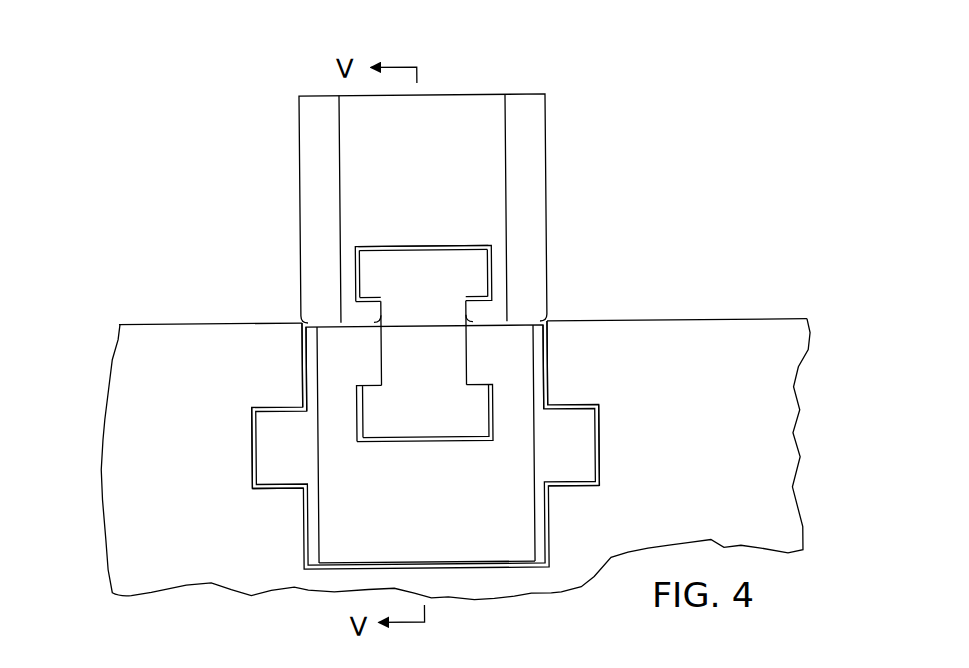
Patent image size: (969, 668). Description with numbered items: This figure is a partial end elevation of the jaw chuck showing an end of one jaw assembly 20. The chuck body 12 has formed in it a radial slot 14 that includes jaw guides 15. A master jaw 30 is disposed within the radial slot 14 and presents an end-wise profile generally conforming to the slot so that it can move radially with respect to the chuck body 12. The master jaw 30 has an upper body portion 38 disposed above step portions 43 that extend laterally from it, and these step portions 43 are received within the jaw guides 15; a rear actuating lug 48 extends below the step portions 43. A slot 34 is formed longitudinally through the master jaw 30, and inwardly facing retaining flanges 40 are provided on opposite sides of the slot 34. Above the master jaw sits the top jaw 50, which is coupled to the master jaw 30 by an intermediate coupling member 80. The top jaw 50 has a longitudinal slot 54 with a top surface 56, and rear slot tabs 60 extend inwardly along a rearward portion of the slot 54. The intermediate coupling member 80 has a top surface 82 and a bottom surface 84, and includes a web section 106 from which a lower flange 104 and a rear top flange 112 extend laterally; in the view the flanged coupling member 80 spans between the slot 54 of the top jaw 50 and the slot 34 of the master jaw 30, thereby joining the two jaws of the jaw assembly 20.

The jaw assembly 20 is at (246, 108).
The top jaw 50 is at (552, 90).
The top surface 82 is at (450, 246).
The intermediate coupling member 80 is at (496, 254).
The rear top flange 112 is at (372, 273).
The top surface of the slot 56 is at (397, 252).
The longitudinal slot 54 is at (363, 285).
The rear slot tabs 60 is at (370, 313).
The chuck body 12 is at (775, 331).
The web section 106 is at (452, 350).
The upper body portion 38 is at (549, 343).
The retaining flanges 40 is at (363, 360).
The lower flange 104 is at (373, 402).
The jaw guides 15 is at (257, 437).
The slot 34 is at (360, 416).
The bottom surface 84 is at (437, 435).
The step portions 43 is at (262, 470).
The master jaw 30 is at (604, 454).
The radial slots 14 is at (558, 518).
The rear actuating lug 48 is at (498, 547).